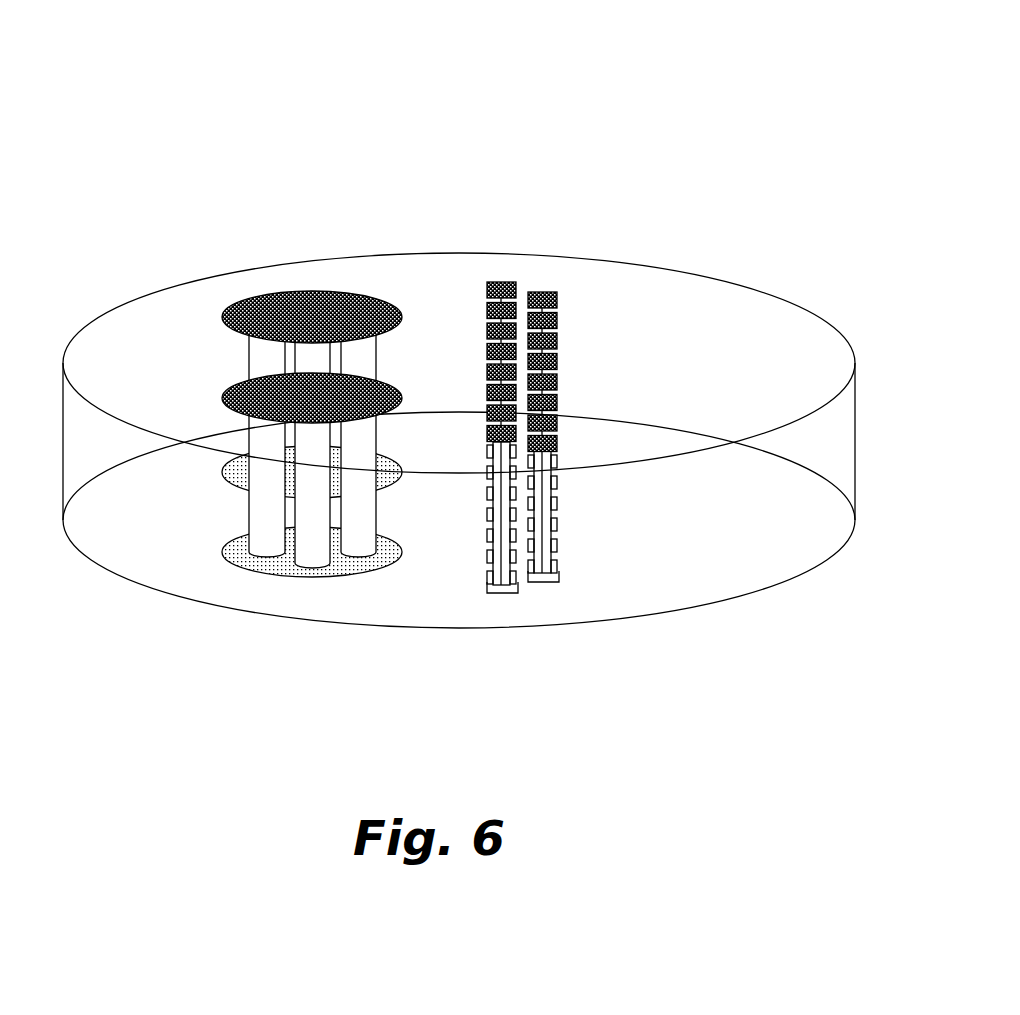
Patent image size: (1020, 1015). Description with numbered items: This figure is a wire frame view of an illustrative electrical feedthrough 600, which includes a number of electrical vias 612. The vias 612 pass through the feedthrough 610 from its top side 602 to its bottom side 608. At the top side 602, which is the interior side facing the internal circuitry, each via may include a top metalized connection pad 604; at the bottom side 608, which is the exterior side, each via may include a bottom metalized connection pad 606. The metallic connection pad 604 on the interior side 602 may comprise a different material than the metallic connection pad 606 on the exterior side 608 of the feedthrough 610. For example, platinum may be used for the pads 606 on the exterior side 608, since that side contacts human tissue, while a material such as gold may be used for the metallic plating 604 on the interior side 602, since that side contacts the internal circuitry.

The feedthrough 600 is at (432, 323).
The top side 602 is at (673, 319).
The top metalized connection pad 604 is at (258, 392).
The bottom metalized connection pad 606 is at (240, 553).
The bottom side 608 is at (803, 527).
The feedthrough 610 is at (63, 433).
The electrical vias 612 is at (363, 493).